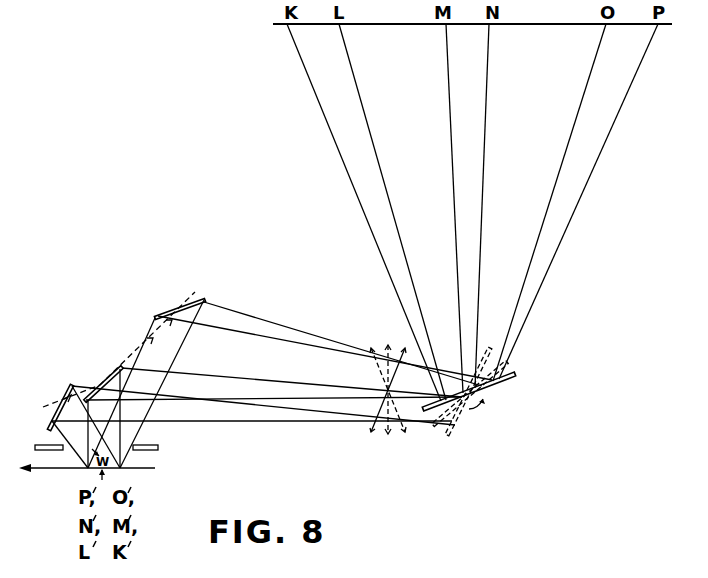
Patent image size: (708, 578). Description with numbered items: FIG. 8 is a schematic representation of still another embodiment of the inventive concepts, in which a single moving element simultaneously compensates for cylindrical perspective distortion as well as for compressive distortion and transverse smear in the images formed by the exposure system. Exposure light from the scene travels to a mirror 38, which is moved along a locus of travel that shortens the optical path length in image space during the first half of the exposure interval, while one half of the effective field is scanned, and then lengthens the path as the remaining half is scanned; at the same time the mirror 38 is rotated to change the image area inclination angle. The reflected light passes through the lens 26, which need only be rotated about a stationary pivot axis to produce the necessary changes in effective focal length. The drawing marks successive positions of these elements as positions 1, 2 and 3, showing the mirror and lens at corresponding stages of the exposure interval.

The lens 26 is at (386, 372).
The scanning mirror 38 is at (493, 386).
The mirror position 1 is at (174, 307).
The mirror position 2 is at (103, 374).
The mirror position 3 is at (62, 397).